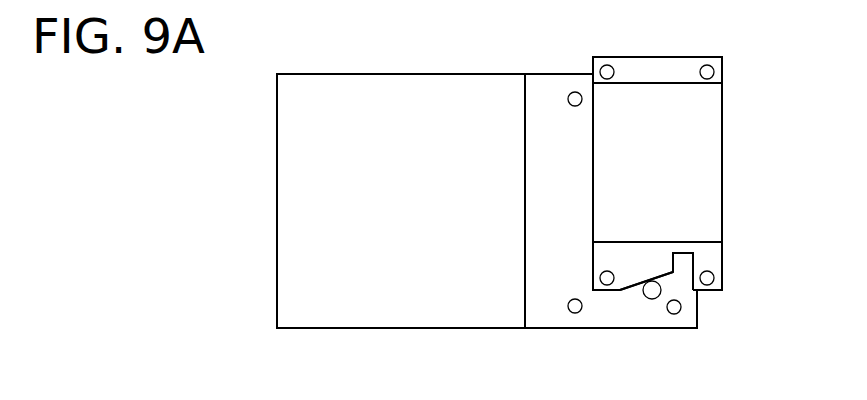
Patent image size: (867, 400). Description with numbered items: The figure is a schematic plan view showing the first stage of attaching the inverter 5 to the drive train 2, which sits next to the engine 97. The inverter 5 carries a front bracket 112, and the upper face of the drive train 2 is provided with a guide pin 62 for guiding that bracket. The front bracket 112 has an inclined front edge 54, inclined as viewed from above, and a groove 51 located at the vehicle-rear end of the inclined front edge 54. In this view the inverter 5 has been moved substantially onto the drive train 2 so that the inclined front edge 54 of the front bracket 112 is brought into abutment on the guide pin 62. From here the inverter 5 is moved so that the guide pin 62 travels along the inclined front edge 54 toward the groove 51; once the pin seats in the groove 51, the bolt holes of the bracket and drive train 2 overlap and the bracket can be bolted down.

The engine 97 is at (397, 93).
The drive train 2 is at (548, 95).
The inverter 5 is at (707, 142).
The groove 51 is at (693, 267).
The inclined front edge 54 is at (630, 287).
The guide pin 62 is at (654, 300).
The front bracket 112 is at (603, 252).